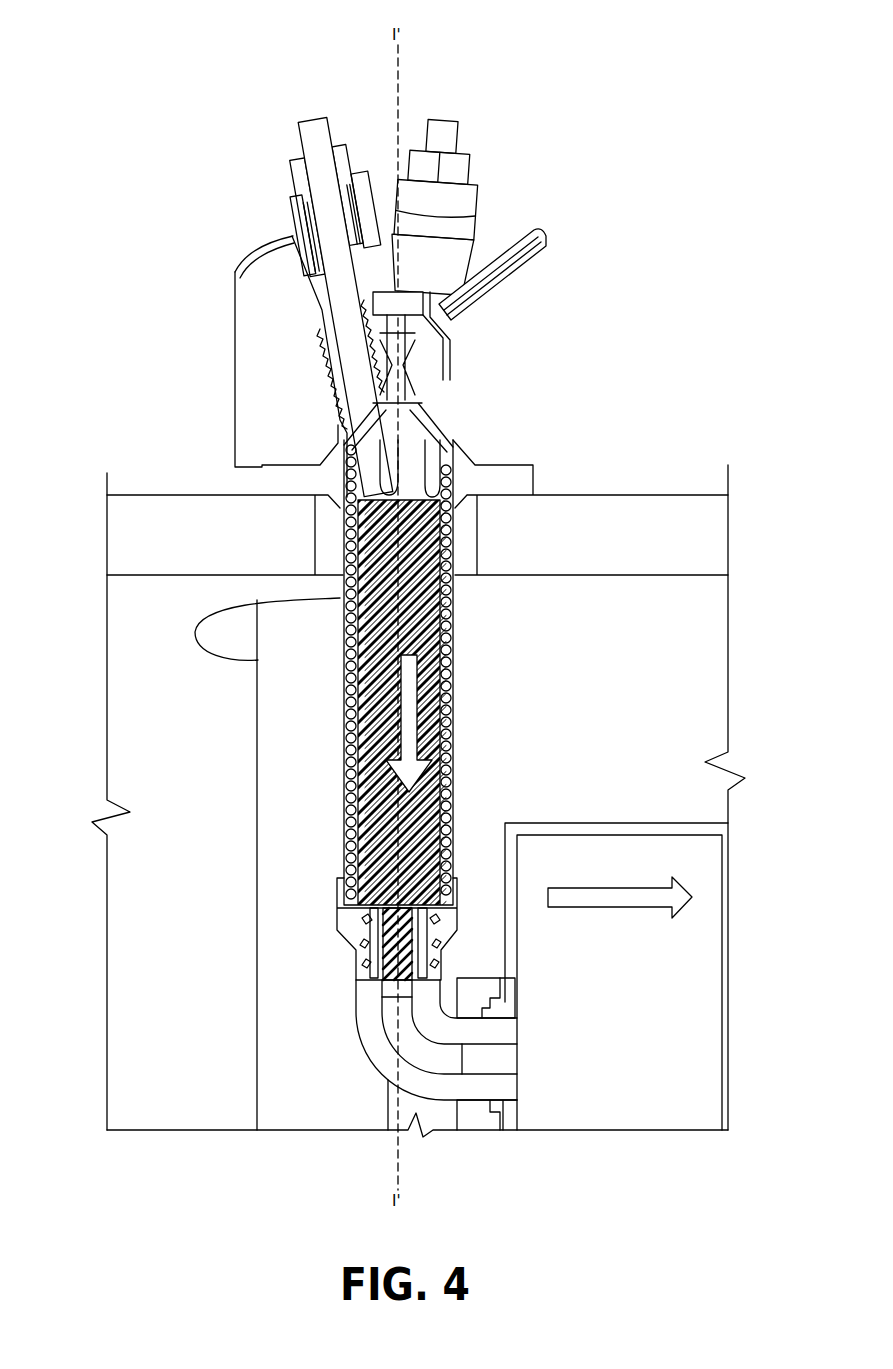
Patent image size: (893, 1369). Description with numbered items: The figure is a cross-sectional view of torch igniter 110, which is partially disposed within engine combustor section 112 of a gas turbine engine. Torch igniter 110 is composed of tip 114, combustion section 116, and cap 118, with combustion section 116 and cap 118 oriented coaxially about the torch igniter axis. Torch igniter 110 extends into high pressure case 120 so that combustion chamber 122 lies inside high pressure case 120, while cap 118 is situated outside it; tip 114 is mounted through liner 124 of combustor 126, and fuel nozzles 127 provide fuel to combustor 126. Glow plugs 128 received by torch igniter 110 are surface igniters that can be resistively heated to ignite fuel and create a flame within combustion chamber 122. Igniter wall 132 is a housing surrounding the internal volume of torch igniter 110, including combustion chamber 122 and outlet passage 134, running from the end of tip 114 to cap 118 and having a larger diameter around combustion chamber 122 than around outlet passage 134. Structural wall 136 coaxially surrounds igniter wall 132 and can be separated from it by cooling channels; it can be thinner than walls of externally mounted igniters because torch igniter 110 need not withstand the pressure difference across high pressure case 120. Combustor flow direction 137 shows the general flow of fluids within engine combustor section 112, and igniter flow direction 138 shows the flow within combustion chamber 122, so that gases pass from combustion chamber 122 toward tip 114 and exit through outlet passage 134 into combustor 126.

The torch igniter 110 is at (399, 631).
The engine combustor section 112 is at (203, 1165).
The tip 114 is at (352, 1047).
The combustion section 116 is at (280, 547).
The cap 118 is at (266, 329).
The high pressure case 120 is at (142, 510).
The combustion chamber 122 is at (432, 598).
The liner 124 is at (628, 975).
The combustor 126 is at (634, 1005).
The fuel nozzles 127 is at (290, 842).
The glow plugs 128 is at (311, 120).
The igniter wall 132 is at (343, 875).
The outlet passage 134 is at (440, 1070).
The structural wall 136 is at (338, 758).
The combustor flow direction 137 is at (650, 908).
The igniter flow direction 138 is at (442, 738).